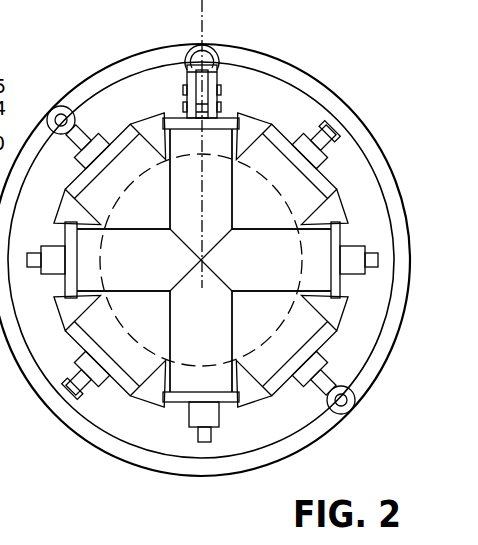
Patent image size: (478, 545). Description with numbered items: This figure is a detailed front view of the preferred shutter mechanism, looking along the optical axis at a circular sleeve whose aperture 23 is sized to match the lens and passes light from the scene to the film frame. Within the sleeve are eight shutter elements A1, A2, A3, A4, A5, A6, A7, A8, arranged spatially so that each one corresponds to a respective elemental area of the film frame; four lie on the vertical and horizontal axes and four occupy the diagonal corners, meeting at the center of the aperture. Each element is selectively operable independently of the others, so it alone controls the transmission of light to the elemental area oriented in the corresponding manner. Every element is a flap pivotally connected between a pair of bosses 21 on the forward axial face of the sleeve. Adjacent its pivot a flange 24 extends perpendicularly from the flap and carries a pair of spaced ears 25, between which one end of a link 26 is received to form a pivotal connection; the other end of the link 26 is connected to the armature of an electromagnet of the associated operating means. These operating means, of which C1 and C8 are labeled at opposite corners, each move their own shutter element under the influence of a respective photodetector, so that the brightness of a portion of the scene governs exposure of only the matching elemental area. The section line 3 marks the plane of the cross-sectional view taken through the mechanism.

The section line 3- 3 is at (246, 275).
The bosses 21 is at (261, 117).
The aperture 23 is at (342, 217).
The flange 24 is at (231, 118).
The ears 25 is at (219, 78).
The link 26 is at (197, 43).
The operating means C1 is at (55, 93).
The operating means C8 is at (365, 411).
The shutter element A1 is at (123, 179).
The shutter element A2 is at (201, 179).
The shutter element A3 is at (281, 179).
The shutter element A4 is at (123, 260).
The shutter element A5 is at (281, 260).
The shutter element A6 is at (123, 341).
The shutter element A7 is at (201, 341).
The shutter element A8 is at (281, 341).